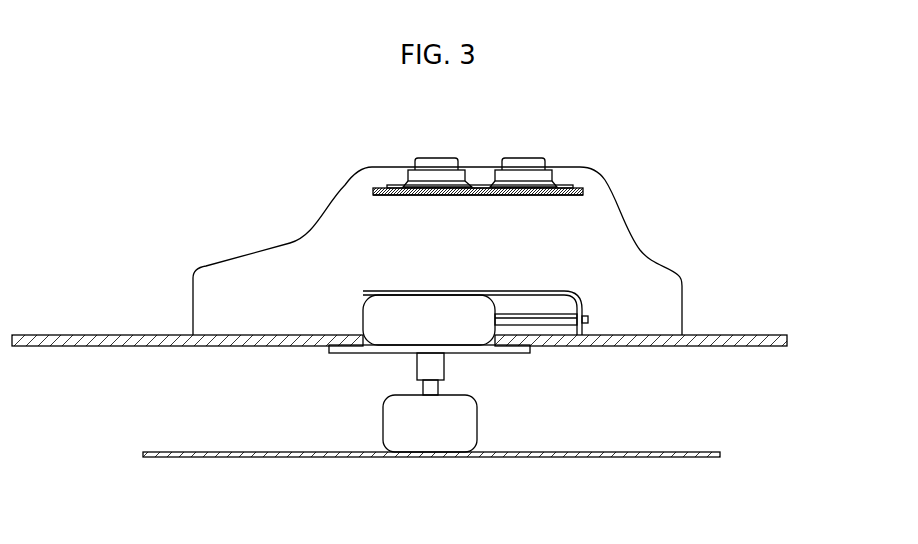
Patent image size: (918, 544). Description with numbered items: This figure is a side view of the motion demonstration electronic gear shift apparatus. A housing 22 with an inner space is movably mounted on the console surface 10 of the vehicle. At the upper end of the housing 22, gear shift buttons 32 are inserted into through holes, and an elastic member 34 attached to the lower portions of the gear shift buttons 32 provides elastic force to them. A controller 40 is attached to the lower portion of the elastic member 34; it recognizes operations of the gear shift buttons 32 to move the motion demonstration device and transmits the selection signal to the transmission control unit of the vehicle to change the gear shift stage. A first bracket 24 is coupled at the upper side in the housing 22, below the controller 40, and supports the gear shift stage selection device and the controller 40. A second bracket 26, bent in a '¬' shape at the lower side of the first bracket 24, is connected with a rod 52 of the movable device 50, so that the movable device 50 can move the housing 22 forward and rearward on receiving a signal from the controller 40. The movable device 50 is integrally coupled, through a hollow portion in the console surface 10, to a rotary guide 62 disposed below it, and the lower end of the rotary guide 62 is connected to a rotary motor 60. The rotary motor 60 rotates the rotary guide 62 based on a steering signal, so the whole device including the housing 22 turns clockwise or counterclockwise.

The console surface 10 is at (89, 335).
The housing 22 is at (298, 254).
The first bracket 24 is at (392, 196).
The second bracket 26 is at (525, 290).
The gear shift buttons 32 is at (532, 162).
The elastic member 34 is at (490, 182).
The controller 40 is at (378, 190).
The movable device 50 is at (383, 320).
The rod 52 is at (556, 320).
The rotary motor 60 is at (427, 432).
The rotary guide 62 is at (356, 353).